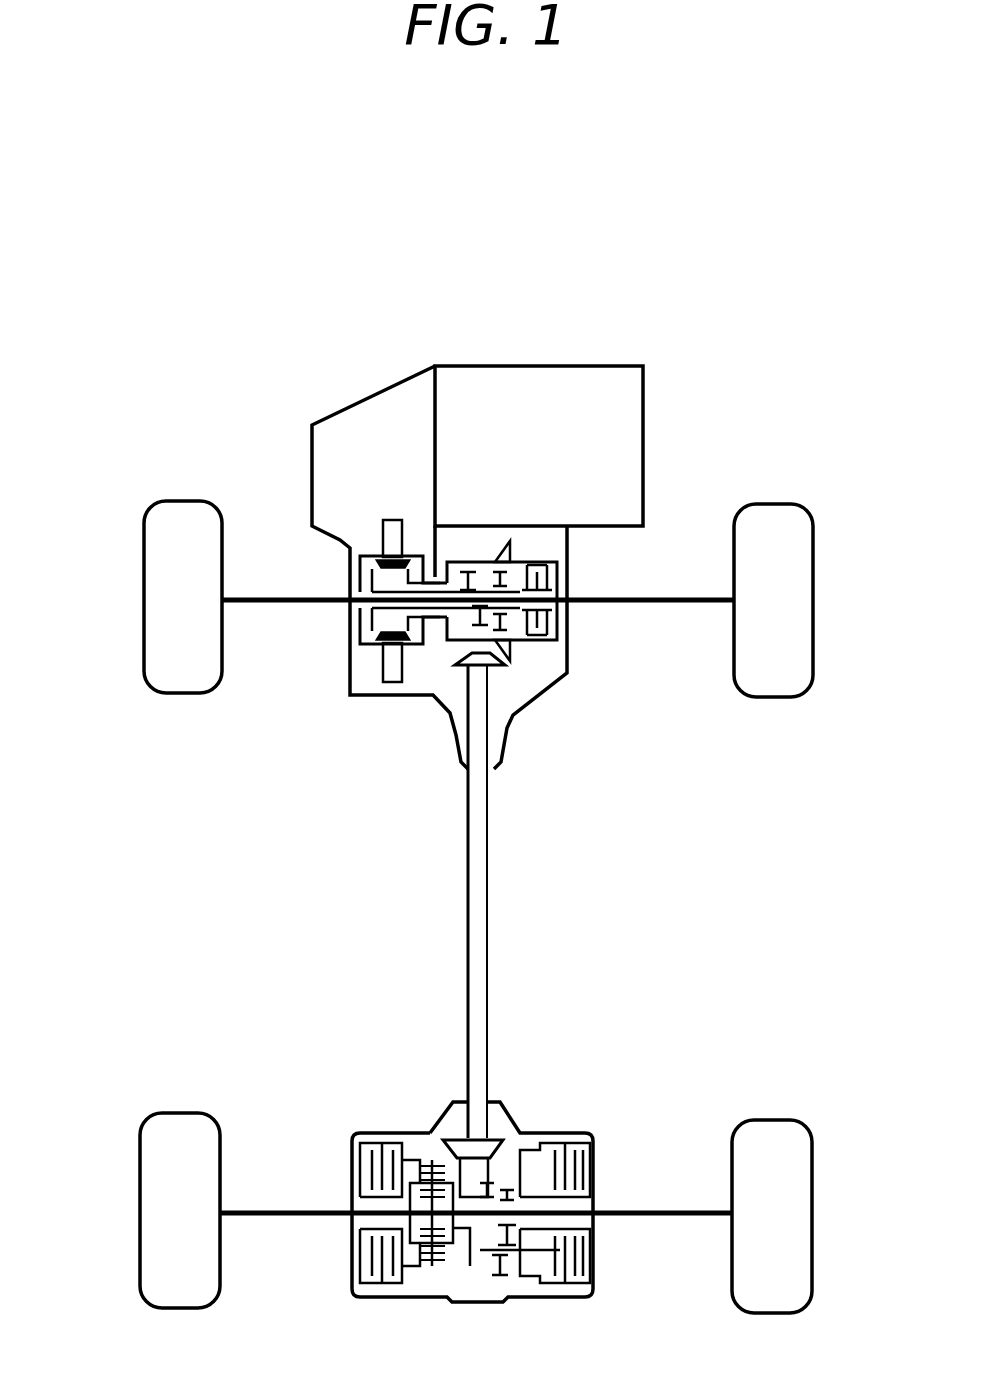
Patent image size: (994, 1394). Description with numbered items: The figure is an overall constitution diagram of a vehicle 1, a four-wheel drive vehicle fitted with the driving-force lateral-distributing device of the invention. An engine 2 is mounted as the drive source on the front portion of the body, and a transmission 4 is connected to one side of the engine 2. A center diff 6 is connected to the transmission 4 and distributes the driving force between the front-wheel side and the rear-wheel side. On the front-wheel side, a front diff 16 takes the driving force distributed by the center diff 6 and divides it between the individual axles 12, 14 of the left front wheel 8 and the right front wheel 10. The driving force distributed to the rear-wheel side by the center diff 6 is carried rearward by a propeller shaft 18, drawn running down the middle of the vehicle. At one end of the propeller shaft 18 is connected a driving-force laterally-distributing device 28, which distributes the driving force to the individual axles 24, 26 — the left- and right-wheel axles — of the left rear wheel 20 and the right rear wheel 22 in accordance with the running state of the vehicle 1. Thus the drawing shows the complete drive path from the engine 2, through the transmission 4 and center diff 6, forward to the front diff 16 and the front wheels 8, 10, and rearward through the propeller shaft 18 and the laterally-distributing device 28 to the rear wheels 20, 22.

The vehicle 1 is at (714, 452).
The engine 2 is at (575, 366).
The transmission 4 is at (376, 394).
The center diff 6 is at (372, 648).
The left front wheel 8 is at (155, 578).
The right front wheel 10 is at (795, 590).
The axle 12 is at (287, 603).
The axle 14 is at (672, 603).
The front diff 16 is at (545, 648).
The propeller shaft 18 is at (478, 918).
The left rear wheel 20 is at (150, 1190).
The right rear wheel 22 is at (790, 1208).
The axle 24 is at (280, 1208).
The axle 26 is at (668, 1210).
The driving-force laterally-distributing device 28 is at (563, 1132).